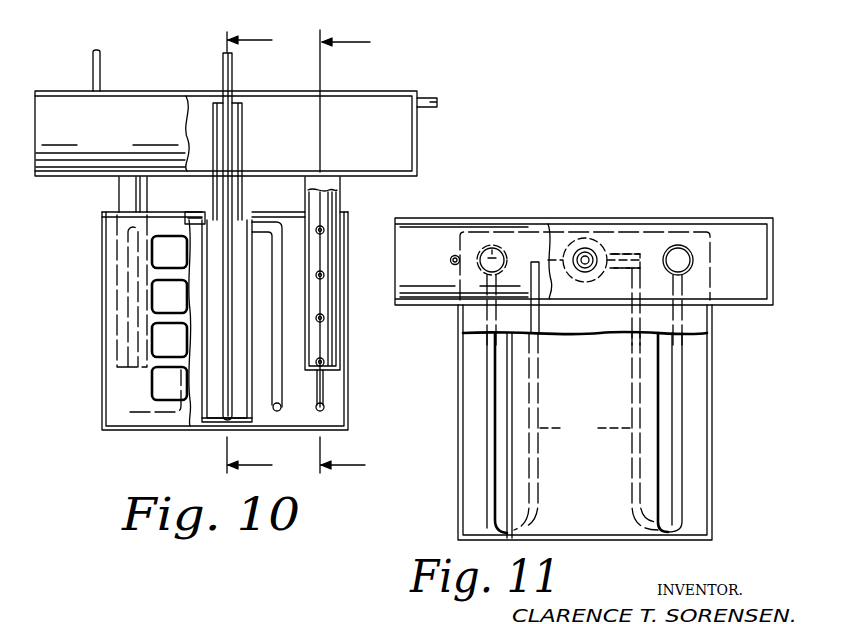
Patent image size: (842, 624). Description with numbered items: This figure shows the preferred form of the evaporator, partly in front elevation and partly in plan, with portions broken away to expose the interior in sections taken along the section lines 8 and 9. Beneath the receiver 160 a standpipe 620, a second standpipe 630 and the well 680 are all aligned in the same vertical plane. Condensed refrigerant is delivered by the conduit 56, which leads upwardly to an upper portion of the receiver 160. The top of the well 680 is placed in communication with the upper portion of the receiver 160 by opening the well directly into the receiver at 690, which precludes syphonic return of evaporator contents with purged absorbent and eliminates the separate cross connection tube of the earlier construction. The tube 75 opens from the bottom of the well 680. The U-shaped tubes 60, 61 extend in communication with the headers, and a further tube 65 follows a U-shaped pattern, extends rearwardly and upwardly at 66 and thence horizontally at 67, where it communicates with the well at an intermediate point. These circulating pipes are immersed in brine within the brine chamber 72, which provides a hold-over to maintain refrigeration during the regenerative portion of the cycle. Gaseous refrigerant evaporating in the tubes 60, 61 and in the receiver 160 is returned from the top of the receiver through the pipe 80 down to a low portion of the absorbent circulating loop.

In FIG. 10, the section line 8- 8 is at (345, 253).
In FIG. 10, the section line 9- 9 is at (249, 250).
In FIG. 10, the conduit 56 is at (437, 102).
In FIG. 10, the U-shaped tube 60 is at (325, 275).
In FIG. 10, the U-shaped tube 61 is at (325, 230).
In FIG. 11, the U-shaped tube 61 is at (490, 410).
In FIG. 10, the tube 65 is at (281, 410).
In FIG. 11, the tube 65 is at (586, 431).
In FIG. 10, the rearwardly and upwardly extending portion of tube 66 is at (113, 391).
In FIG. 10, the horizontal portion of tube 67 is at (198, 222).
In FIG. 11, the horizontal portion of tube 67 is at (635, 220).
In FIG. 10, the brine chamber 72 is at (348, 336).
In FIG. 11, the brine chamber 72 is at (713, 463).
In FIG. 10, the tube 75 is at (222, 66).
In FIG. 11, the tube 75 is at (588, 256).
In FIG. 11, the refrigerant return pipe 80 is at (455, 266).
In FIG. 10, the receiver 160 is at (388, 91).
In FIG. 11, the receiver 160 is at (447, 230).
In FIG. 10, the standpipe 620 is at (119, 195).
In FIG. 11, the standpipe 620 is at (493, 245).
In FIG. 10, the standpipe 630 is at (340, 201).
In FIG. 11, the standpipe 630 is at (680, 246).
In FIG. 10, the well 680 is at (202, 423).
In FIG. 11, the well 680 is at (578, 240).
In FIG. 10, the opening of well into receiver 690 is at (237, 97).